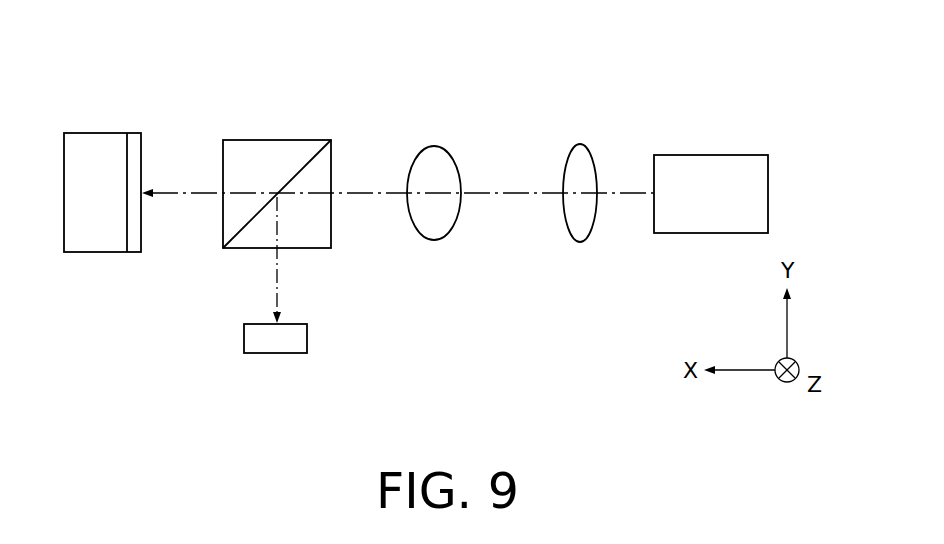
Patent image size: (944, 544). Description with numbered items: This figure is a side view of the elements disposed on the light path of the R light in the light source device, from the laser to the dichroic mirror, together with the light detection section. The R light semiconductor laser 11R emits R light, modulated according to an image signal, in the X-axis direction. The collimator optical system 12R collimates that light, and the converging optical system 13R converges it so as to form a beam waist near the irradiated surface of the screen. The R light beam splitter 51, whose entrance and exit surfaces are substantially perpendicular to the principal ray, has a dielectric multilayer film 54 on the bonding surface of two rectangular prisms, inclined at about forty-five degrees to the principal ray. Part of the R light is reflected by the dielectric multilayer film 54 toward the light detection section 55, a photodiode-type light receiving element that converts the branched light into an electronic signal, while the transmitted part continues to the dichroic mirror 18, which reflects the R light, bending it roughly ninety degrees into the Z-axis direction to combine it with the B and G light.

The dichroic mirror 18 is at (98, 145).
The R light beam splitter 51 is at (275, 153).
The dielectric multilayer film 54 is at (246, 236).
The light detection section 55 is at (307, 338).
The converging optical system 13R is at (430, 153).
The collimator optical system 12R is at (580, 152).
The R light semiconductor laser 11R is at (709, 167).